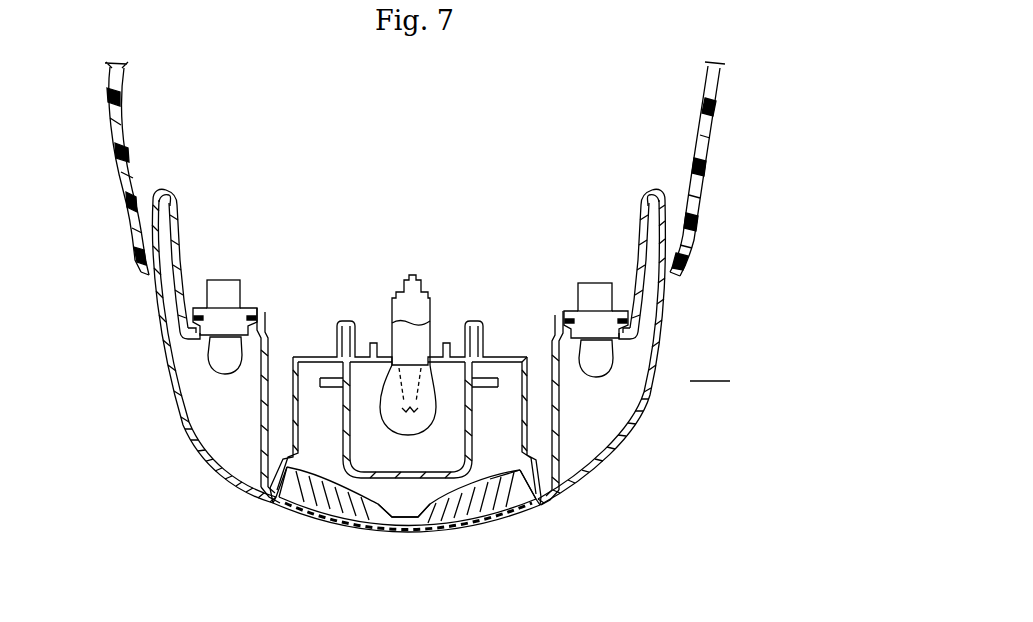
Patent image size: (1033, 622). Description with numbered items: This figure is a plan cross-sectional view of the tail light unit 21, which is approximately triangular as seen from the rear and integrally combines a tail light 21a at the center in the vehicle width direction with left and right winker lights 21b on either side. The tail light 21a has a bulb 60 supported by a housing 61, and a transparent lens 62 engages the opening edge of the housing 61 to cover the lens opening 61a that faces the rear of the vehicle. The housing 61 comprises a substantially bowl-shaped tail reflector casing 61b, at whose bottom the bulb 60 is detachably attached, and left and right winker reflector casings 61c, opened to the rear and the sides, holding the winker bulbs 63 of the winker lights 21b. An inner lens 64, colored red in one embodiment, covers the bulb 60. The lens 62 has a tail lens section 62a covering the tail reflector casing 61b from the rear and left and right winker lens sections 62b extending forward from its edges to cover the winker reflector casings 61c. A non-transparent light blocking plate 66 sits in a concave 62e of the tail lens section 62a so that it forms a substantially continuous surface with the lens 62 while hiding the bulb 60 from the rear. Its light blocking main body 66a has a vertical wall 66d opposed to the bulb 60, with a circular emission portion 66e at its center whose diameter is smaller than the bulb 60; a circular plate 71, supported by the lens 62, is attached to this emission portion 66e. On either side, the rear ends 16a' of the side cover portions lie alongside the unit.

The rear ends of side cover portions 16a' is at (416, 169).
The tail light unit 21 is at (686, 381).
The tail light 21a is at (455, 357).
The winker lights 21b is at (410, 314).
The bulb 60 is at (430, 387).
The housing 61 is at (467, 347).
The lens opening 61a is at (693, 240).
The tail reflector casing 61b is at (522, 354).
The winker reflector casings 61c is at (266, 340).
The lens 62 is at (423, 352).
The tail lens section 62a is at (472, 528).
The winker lens sections 62b is at (168, 395).
The concave 62e is at (280, 509).
The winker bulbs 63 is at (204, 358).
The inner lens 64 is at (343, 435).
The light blocking plate 66 is at (401, 536).
The light blocking main body 66a is at (332, 502).
The vertical wall 66d is at (502, 520).
The emission portion 66e is at (415, 532).
The circular plate 71 is at (400, 531).